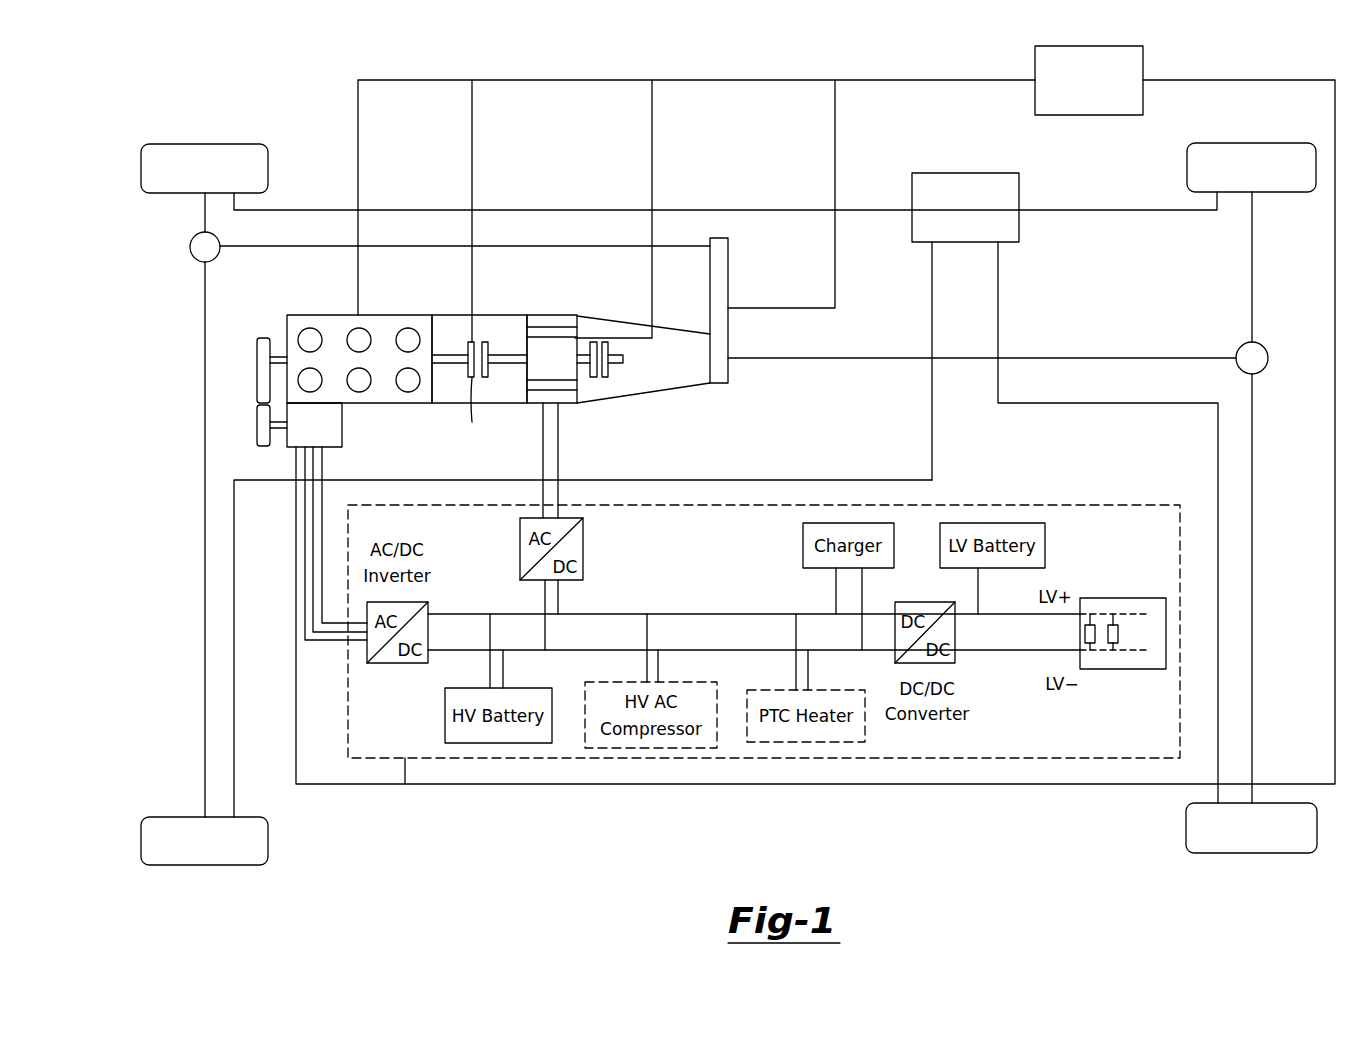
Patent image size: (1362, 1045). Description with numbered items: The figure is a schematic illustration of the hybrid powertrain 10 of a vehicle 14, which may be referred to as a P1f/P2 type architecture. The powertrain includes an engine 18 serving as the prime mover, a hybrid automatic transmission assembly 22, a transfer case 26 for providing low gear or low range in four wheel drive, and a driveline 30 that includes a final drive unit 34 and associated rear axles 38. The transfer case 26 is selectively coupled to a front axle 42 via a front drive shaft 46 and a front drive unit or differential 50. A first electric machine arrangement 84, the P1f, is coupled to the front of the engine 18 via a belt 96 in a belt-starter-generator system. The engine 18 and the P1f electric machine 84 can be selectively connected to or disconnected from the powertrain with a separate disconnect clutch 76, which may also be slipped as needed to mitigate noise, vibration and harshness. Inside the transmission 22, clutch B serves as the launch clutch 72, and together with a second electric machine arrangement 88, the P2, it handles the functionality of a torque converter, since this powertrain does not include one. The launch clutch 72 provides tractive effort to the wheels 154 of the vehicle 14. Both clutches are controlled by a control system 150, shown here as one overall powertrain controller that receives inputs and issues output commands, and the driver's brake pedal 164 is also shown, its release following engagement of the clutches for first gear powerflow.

The hybrid powertrain 10 is at (699, 188).
The vehicle 14 is at (216, 82).
The engine 18 is at (381, 312).
The hybrid automatic transmission assembly 22 is at (524, 312).
The transfer case 26 is at (735, 340).
The driveline 30 is at (814, 364).
The final drive unit 34 is at (1264, 341).
The rear axles 38 is at (1252, 250).
The front axle 42 is at (205, 330).
The front drive shaft 46 is at (342, 248).
The front drive unit or differential 50 is at (191, 240).
The launch clutch 72 is at (630, 430).
The disconnect clutch 76 is at (448, 456).
The first electric machine (P1f) arrangement 84 is at (250, 412).
The second electric machine (P2) arrangement 88 is at (700, 330).
The belt 96 is at (262, 385).
The control system 150 is at (1143, 60).
The wheels 154 is at (252, 165).
The brake pedal 164 is at (980, 172).